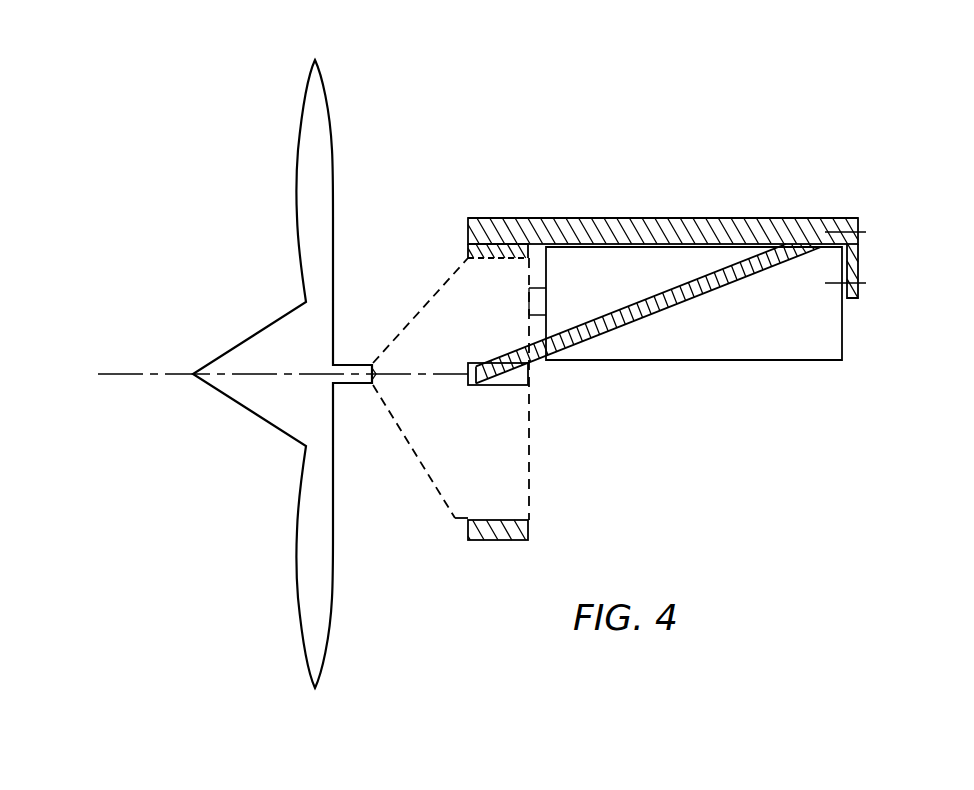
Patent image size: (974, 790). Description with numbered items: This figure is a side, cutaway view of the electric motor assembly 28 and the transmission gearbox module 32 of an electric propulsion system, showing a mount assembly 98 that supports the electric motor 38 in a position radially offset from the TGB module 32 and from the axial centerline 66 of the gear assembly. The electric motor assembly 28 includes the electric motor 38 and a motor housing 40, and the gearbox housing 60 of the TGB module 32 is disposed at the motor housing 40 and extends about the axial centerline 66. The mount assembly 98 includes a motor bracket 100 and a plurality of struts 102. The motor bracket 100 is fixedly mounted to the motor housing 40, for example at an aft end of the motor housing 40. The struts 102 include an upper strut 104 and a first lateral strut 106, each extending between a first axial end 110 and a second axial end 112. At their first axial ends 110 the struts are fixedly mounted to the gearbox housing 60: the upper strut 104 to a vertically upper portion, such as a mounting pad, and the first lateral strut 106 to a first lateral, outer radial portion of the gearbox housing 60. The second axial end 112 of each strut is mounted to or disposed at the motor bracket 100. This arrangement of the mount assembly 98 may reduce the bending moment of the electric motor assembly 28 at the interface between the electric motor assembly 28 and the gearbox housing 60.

The axial centerline 66 is at (150, 372).
The gearbox housing 60 is at (455, 268).
The first axial end 110 is at (480, 208).
The transmission gearbox module 32 is at (550, 484).
The mount assembly 98 is at (711, 210).
The upper strut 104 is at (678, 217).
The struts 102 is at (741, 205).
The second axial end 112 is at (851, 203).
The motor bracket 100 is at (857, 258).
The motor housing 40 is at (729, 342).
The electric motor assembly 28 is at (736, 377).
The electric motor 38 is at (628, 265).
The first lateral strut 106 is at (640, 313).